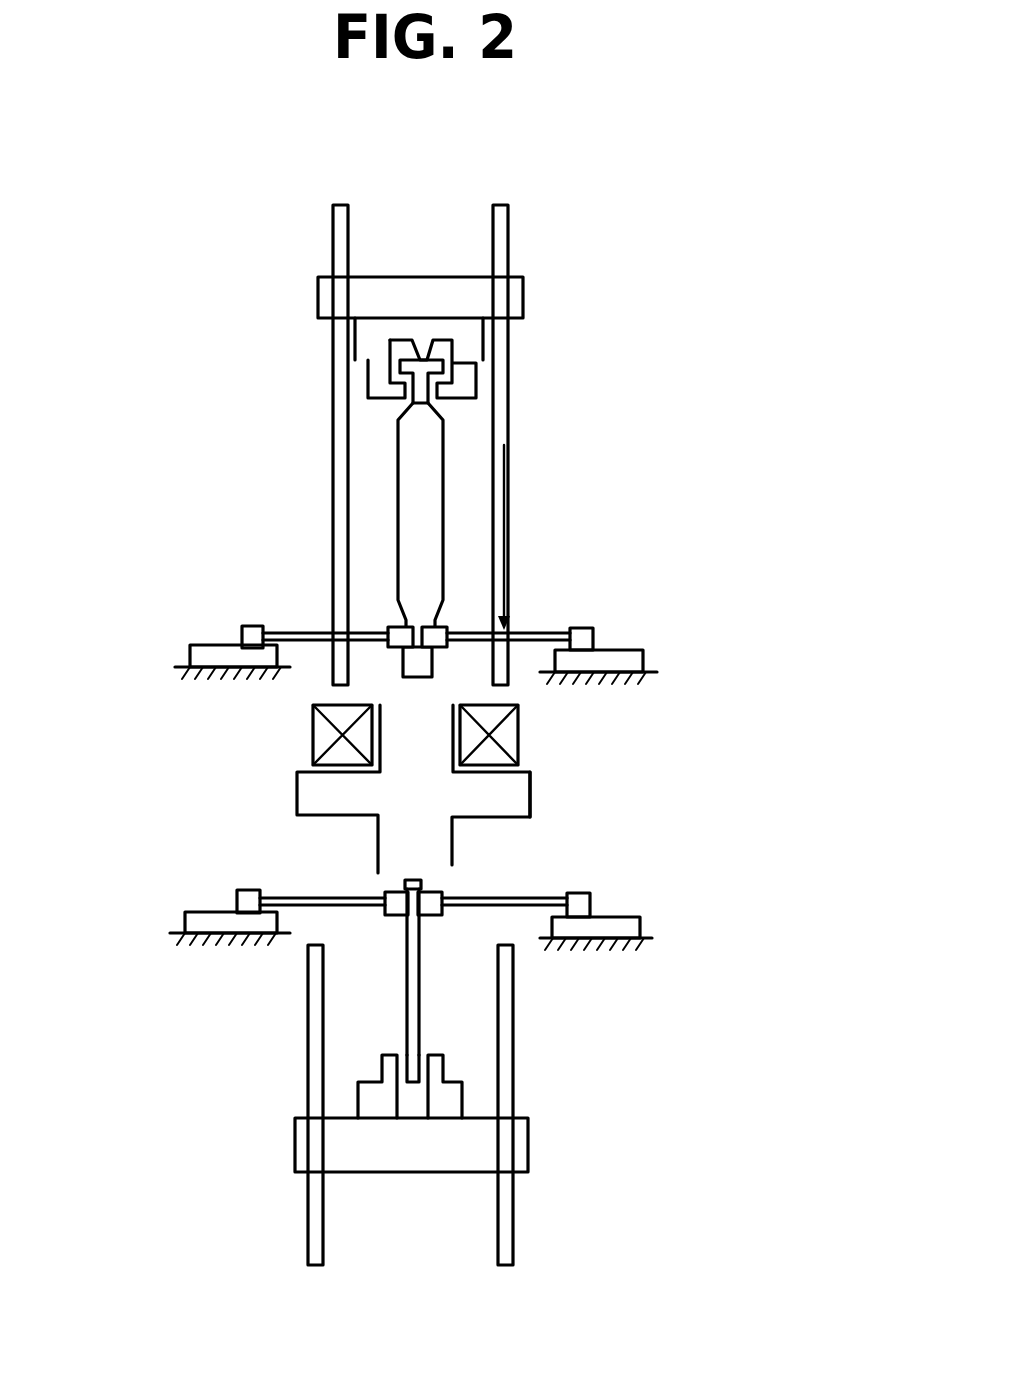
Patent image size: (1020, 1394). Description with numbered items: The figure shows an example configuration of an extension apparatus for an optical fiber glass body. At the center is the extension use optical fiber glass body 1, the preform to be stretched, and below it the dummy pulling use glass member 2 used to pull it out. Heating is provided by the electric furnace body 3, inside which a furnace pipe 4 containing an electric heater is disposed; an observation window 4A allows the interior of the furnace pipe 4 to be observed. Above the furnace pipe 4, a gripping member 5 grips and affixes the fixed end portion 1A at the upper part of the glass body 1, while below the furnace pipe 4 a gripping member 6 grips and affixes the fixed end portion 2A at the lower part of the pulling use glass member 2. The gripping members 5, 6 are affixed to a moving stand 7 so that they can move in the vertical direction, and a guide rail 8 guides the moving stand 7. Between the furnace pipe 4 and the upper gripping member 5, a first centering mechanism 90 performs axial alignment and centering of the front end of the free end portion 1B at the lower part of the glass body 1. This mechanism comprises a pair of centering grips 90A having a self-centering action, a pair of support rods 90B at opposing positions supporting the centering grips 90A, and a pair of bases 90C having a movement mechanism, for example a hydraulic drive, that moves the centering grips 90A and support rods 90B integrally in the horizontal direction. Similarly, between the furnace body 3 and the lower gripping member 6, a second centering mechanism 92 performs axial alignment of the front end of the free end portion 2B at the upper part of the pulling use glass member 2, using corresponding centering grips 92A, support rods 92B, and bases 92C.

The extension use optical fiber glass body 1 is at (443, 447).
The fixed end portion 1A is at (433, 367).
The free end portion 1B is at (403, 660).
The dummy pulling use glass member 2 is at (420, 1011).
The fixed end portion 2A is at (443, 1072).
The free end portion 2B is at (408, 883).
The electric furnace body 3 is at (507, 738).
The furnace pipe 4 is at (453, 740).
The observation window 4A is at (531, 798).
The gripping member 5 is at (481, 338).
The gripping member 6 is at (458, 1108).
The moving stand 7 is at (523, 292).
The guide rail 8 is at (349, 232).
The first centering mechanism 90 is at (415, 578).
The centering grip 90A is at (387, 622).
The support rod 90B is at (297, 632).
The base 90C is at (242, 643).
The second centering mechanism 92 is at (438, 876).
The centering grip 92A is at (398, 916).
The support rod 92B is at (327, 908).
The base 92C is at (238, 892).